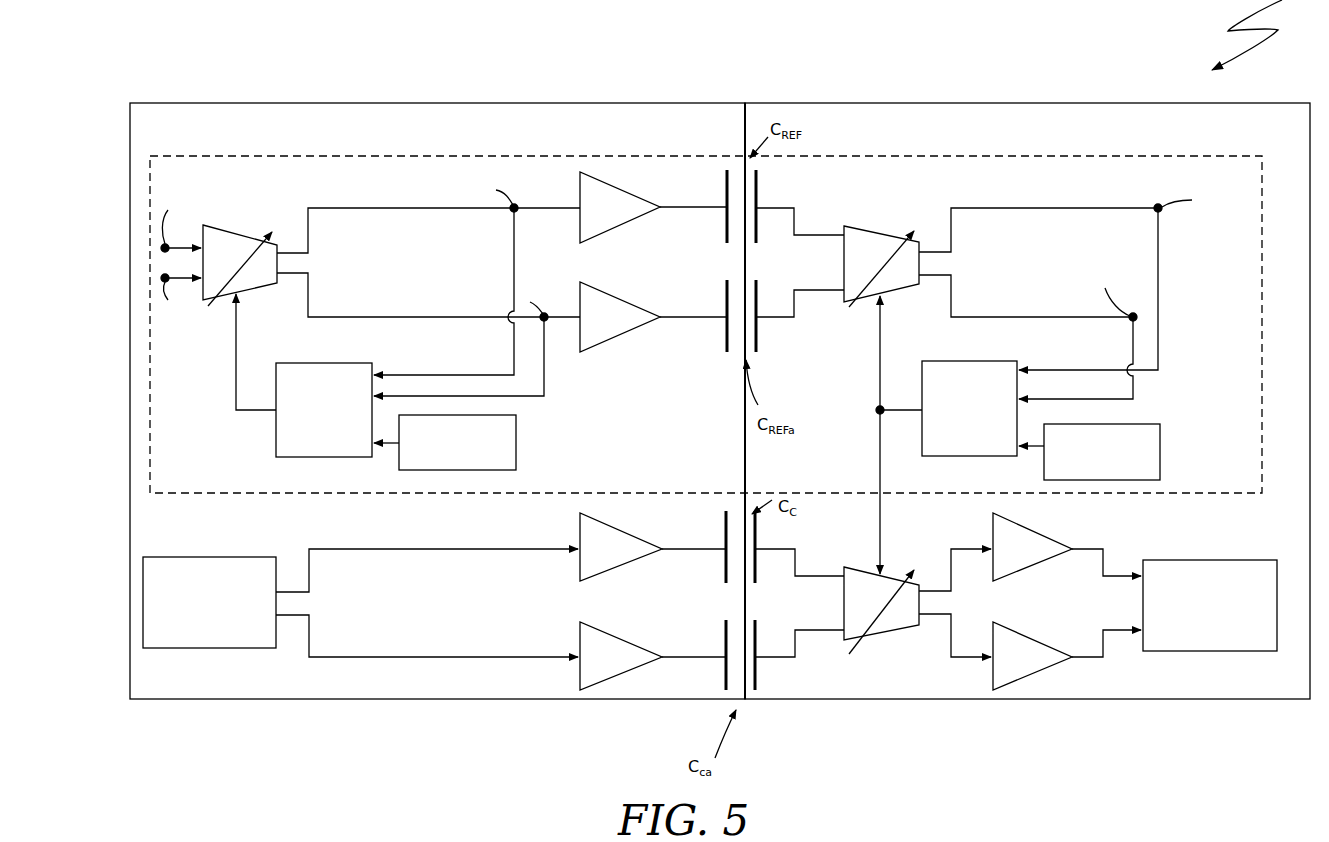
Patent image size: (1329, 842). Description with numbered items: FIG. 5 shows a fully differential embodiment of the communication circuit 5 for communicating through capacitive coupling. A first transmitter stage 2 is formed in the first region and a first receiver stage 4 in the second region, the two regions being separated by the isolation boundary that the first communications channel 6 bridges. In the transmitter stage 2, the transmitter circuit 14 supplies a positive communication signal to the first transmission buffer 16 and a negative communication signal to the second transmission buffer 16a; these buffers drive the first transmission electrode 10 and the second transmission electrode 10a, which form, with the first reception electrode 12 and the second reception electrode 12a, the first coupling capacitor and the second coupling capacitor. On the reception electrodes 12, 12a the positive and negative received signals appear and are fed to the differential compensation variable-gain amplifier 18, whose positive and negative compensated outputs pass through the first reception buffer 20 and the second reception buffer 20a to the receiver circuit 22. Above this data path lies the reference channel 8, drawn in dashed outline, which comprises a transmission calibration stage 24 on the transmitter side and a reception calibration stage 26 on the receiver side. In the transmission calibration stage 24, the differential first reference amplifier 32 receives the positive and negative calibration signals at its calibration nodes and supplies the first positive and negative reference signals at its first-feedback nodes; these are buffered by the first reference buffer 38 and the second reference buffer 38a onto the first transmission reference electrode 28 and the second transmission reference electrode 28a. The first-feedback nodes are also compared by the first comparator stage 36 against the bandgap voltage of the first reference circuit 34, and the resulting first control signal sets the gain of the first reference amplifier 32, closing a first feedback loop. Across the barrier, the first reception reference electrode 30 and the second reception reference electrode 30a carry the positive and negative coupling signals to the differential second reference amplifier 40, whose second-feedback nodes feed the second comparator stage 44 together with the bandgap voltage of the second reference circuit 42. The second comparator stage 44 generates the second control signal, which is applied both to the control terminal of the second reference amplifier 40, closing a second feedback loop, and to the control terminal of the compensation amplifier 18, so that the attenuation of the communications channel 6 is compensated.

The first transmitter stage 2 is at (288, 676).
The first receiver stage 4 is at (1130, 688).
The isolation system 5 is at (1259, 35).
The first communications channel 6 is at (864, 744).
The reference channel 8 is at (1178, 165).
The first transmission electrode 10 is at (725, 533).
The second transmission electrode 10a is at (725, 682).
The first reception electrode 12 is at (760, 533).
The second reception electrode 12a is at (760, 673).
The transmitter circuit 14 is at (213, 565).
The first transmission buffer 16 is at (584, 532).
The second transmission buffer 16a is at (630, 638).
The compensation variable-gain amplifier 18 is at (898, 615).
The first reception buffer 20 is at (1055, 545).
The second reception buffer 20a is at (1028, 663).
The receiver circuit 22 is at (1222, 625).
The transmission calibration stage 24 is at (410, 178).
The reception calibration stage 26 is at (1045, 204).
The first transmission reference electrode 28 is at (725, 178).
The second transmission reference electrode 28a is at (725, 343).
The first reception reference electrode 30 is at (757, 192).
The second reception reference electrode 30a is at (760, 338).
The first reference amplifier 32 is at (225, 237).
The first reference circuit 34 is at (516, 445).
The first comparator stage 36 is at (287, 428).
The first reference buffer 38 is at (595, 188).
The second reference buffer 38a is at (627, 342).
The second reference amplifier 40 is at (876, 238).
The second reference circuit 42 is at (1160, 435).
The second comparator stage 44 is at (937, 387).